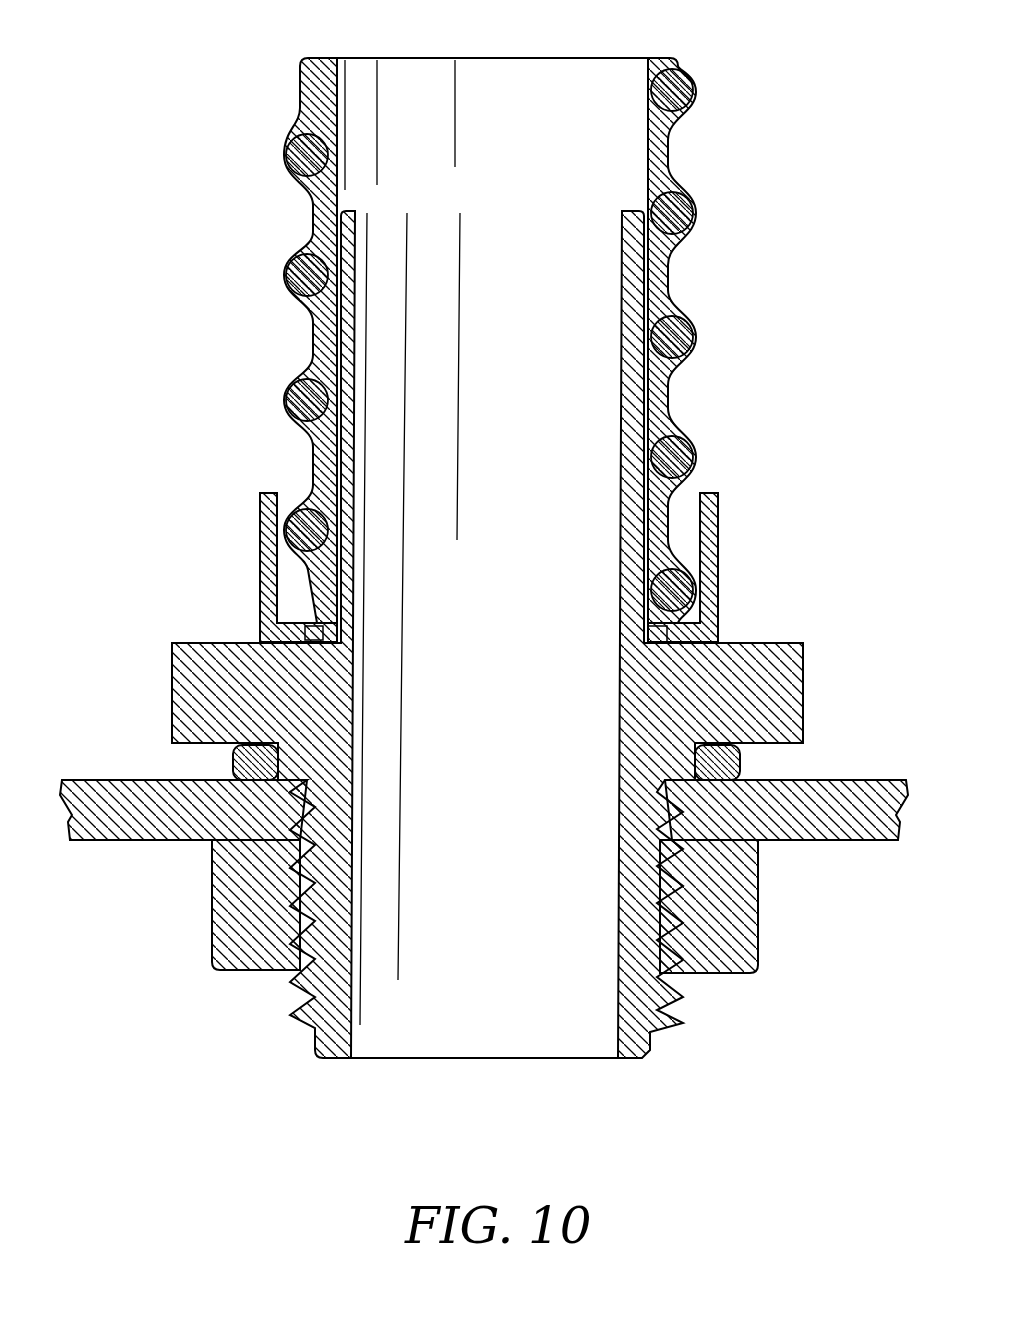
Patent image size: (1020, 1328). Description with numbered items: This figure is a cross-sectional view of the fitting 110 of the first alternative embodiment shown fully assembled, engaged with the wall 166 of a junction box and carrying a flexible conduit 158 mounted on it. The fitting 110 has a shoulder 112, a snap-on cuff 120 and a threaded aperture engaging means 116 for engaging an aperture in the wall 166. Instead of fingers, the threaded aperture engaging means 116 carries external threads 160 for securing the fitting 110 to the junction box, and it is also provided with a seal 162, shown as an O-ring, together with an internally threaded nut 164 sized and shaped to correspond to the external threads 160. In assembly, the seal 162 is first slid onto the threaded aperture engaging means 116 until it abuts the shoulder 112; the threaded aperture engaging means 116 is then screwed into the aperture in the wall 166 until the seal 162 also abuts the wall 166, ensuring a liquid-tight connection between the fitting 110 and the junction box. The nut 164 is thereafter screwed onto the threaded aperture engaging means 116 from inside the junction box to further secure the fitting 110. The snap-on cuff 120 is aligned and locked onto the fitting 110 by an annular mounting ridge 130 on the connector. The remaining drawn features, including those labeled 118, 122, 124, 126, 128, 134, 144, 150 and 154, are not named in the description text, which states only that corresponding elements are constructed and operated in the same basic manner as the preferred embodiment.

The fitting 110 is at (172, 315).
The shoulder 112 is at (778, 683).
The threaded aperture engaging means 116 is at (620, 1053).
The bore 118 is at (488, 243).
The snap-on cuff 120 is at (781, 577).
The corrugation 122 is at (325, 246).
The retaining ring 124 is at (327, 532).
The groove 126 is at (317, 437).
The coil ring 128 is at (648, 417).
The annular mounting ridge 130 is at (625, 617).
The edge 134 is at (623, 662).
The bottom wall 144 is at (707, 605).
The retaining ring 150 is at (718, 541).
The top surface of body 154 is at (640, 663).
The flexible conduit 158 is at (665, 156).
The external threads 160 is at (675, 997).
The seal 162 is at (233, 748).
The nut 164 is at (215, 938).
The wall 166 is at (163, 840).